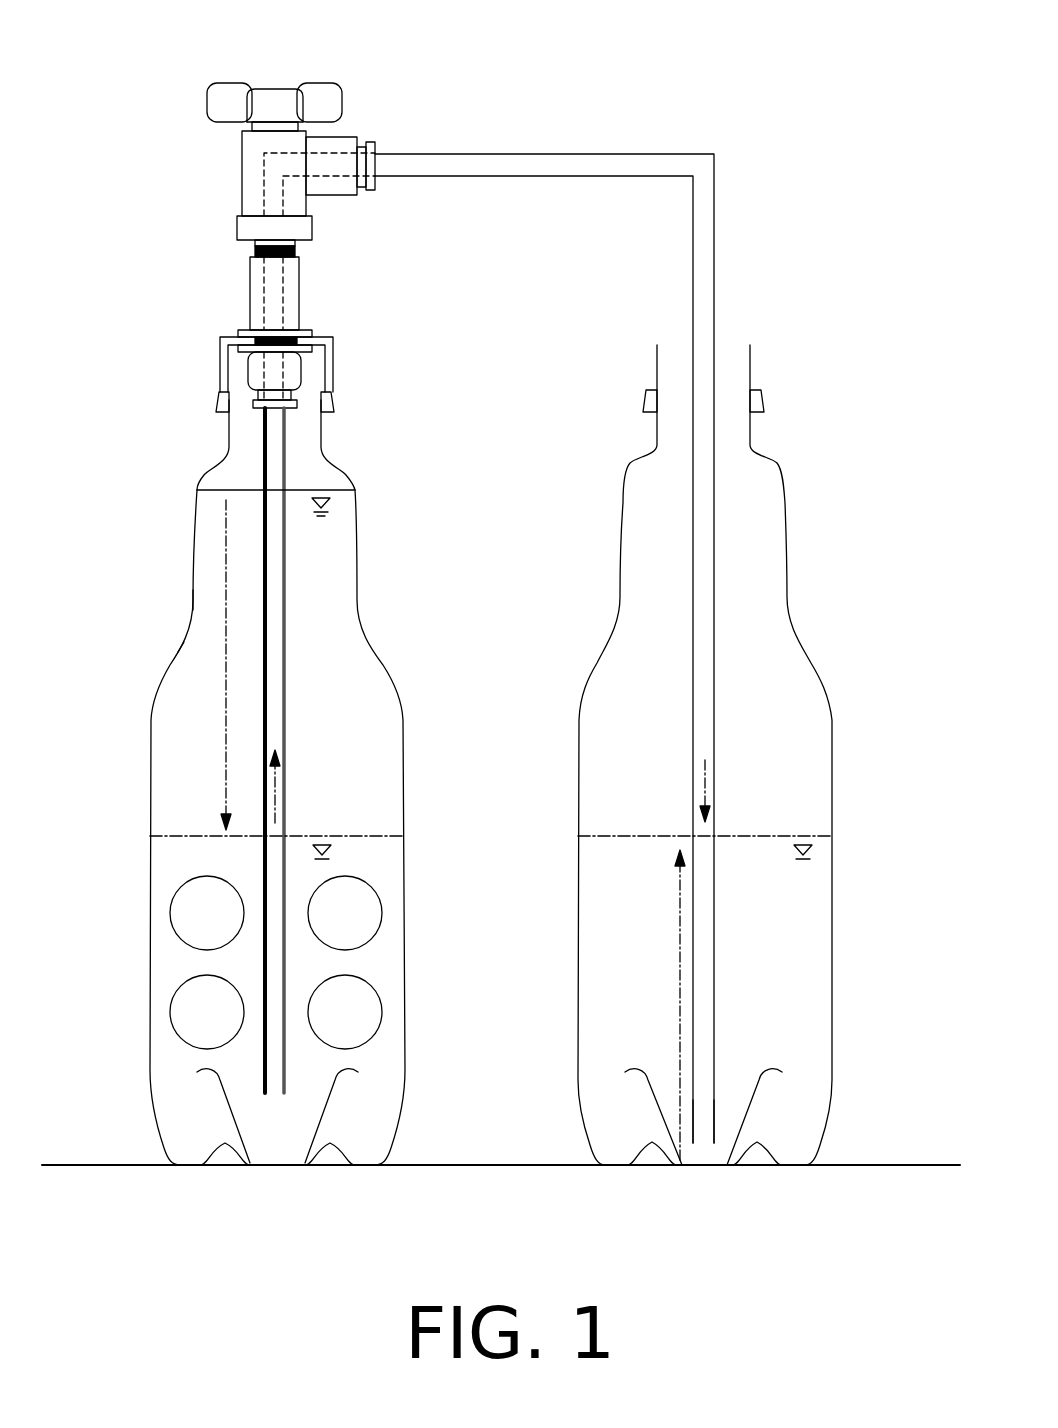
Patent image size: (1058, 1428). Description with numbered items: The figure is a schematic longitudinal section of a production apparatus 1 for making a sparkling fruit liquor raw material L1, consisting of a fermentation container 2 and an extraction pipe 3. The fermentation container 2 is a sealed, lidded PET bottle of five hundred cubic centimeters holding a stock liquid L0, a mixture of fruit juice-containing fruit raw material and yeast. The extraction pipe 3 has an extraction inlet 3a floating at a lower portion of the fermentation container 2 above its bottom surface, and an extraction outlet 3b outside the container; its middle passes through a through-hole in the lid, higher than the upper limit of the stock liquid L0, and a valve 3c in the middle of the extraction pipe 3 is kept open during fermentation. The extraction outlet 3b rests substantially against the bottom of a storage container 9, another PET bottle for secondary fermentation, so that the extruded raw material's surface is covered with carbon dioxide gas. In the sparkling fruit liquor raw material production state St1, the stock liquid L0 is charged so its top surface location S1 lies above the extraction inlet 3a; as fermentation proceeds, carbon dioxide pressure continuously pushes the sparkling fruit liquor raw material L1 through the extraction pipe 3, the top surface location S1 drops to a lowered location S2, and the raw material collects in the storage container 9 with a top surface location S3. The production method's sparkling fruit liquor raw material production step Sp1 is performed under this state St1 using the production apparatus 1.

The production apparatus 1 is at (212, 145).
The fermentation container 2 is at (193, 538).
The extraction pipe 3 is at (550, 153).
The extraction inlet 3a is at (267, 1124).
The extraction outlet 3b is at (715, 1165).
The valve 3c is at (277, 83).
The storage container 9 is at (785, 488).
The top surface location of the stock liquid S1 is at (335, 490).
The lowered top surface location S2 is at (385, 832).
The top surface location of the raw material S3 is at (812, 833).
The stock liquid L0 is at (397, 987).
The sparkling fruit liquor raw material L1 is at (818, 1045).
The sparkling fruit liquor raw material production state St1 is at (157, 595).
The sparkling fruit liquor raw material production step Sp1 is at (157, 639).